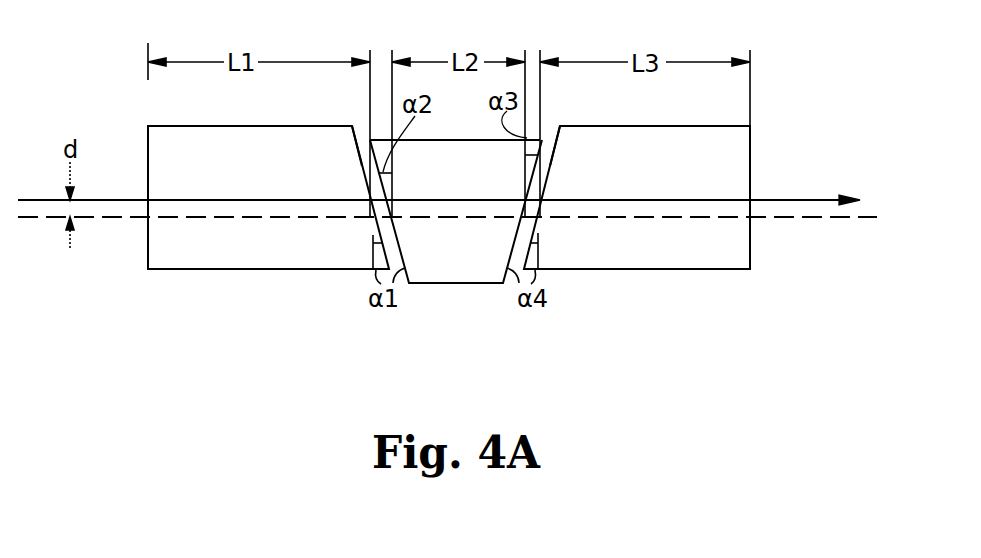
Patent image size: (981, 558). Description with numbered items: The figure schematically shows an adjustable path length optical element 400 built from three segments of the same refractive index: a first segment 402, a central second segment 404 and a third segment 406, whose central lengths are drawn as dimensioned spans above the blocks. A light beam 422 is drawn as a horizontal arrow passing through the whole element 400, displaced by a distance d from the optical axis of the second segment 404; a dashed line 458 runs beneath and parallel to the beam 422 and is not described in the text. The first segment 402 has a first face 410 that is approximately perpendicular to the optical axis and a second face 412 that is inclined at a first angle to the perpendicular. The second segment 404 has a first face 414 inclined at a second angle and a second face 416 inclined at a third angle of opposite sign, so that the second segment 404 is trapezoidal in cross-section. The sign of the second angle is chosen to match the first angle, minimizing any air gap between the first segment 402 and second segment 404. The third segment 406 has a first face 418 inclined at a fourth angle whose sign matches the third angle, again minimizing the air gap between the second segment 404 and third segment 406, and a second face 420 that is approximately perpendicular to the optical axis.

The optical element 400 is at (795, 58).
The first segment 402 is at (177, 272).
The second segment 404 is at (450, 285).
The third segment 406 is at (667, 272).
The first face 410 is at (147, 252).
The second face 412 is at (356, 143).
The first face 414 is at (428, 285).
The second face 416 is at (482, 287).
The first face 418 is at (557, 143).
The second face 420 is at (750, 252).
The light beam 422 is at (798, 198).
The offset axis 458 is at (837, 219).